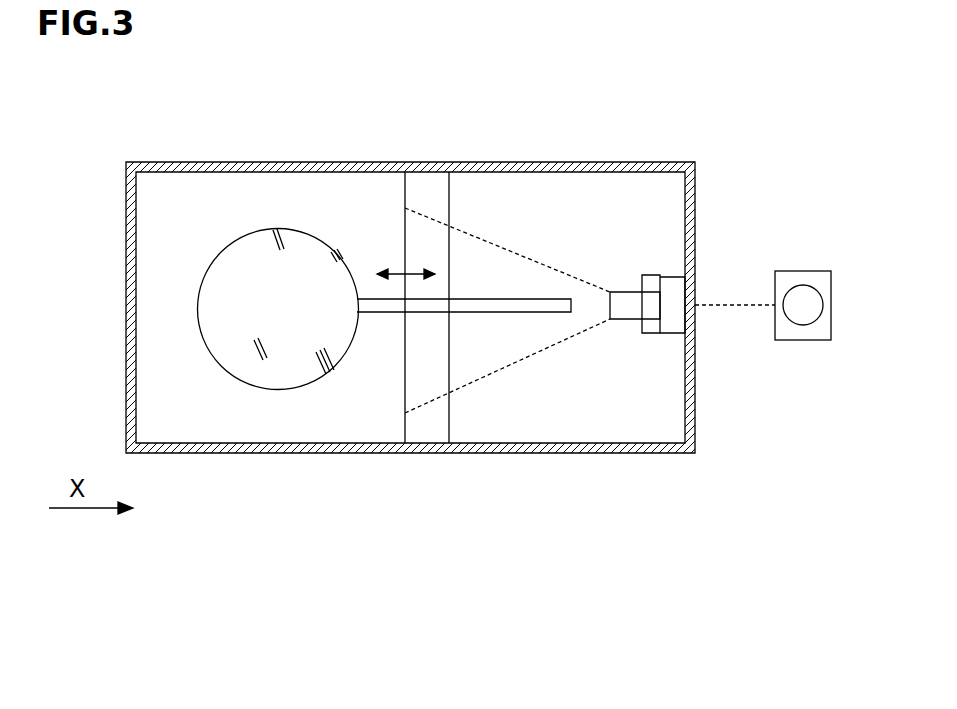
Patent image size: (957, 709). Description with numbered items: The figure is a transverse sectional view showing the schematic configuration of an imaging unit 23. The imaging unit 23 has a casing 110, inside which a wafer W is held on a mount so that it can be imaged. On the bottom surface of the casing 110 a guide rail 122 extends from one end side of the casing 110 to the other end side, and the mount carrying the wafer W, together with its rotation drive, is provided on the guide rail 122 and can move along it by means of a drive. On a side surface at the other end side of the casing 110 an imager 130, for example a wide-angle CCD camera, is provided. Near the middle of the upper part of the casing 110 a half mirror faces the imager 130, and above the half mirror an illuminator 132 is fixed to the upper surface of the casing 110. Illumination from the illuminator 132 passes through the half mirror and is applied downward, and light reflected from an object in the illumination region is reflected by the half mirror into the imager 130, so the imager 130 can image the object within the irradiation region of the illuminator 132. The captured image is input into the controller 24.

The imaging unit 23 is at (135, 138).
The casing 110 is at (553, 165).
The illuminator 132 is at (425, 182).
The guide rail 122 is at (478, 303).
The wafer W is at (205, 300).
The imager 130 is at (648, 308).
The controller 24 is at (832, 303).